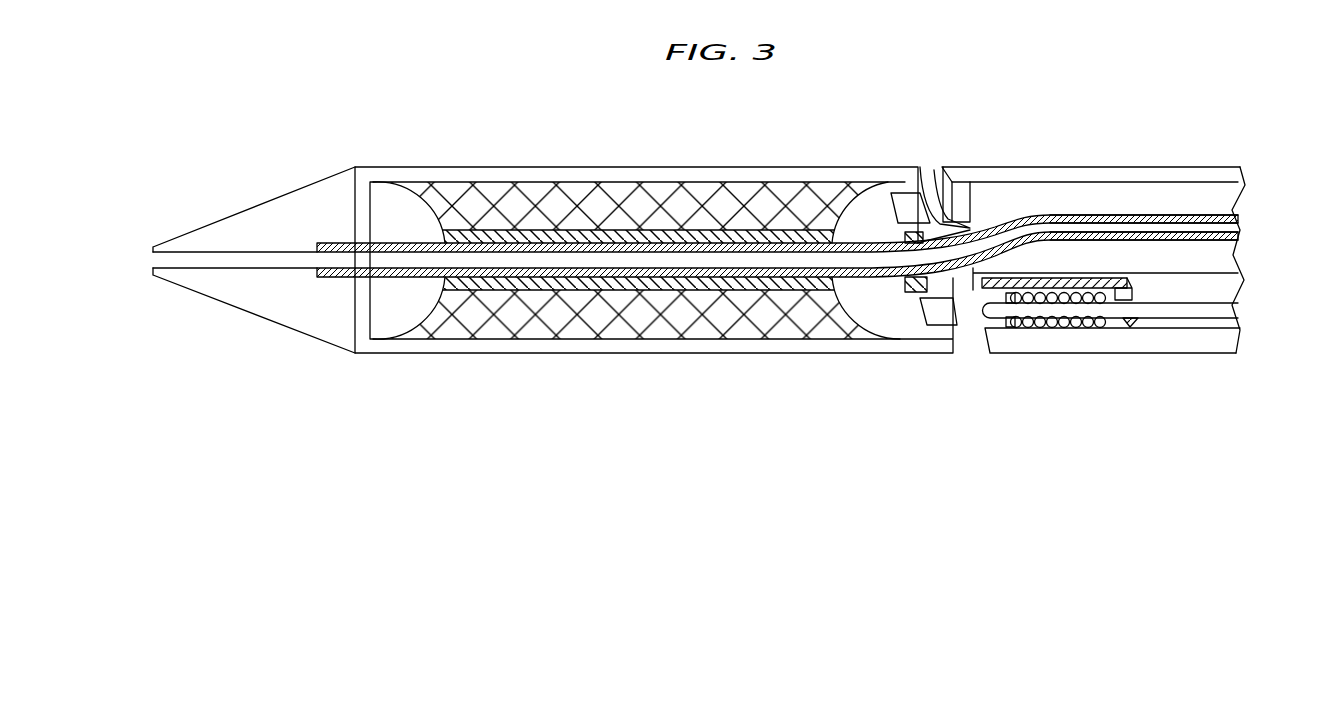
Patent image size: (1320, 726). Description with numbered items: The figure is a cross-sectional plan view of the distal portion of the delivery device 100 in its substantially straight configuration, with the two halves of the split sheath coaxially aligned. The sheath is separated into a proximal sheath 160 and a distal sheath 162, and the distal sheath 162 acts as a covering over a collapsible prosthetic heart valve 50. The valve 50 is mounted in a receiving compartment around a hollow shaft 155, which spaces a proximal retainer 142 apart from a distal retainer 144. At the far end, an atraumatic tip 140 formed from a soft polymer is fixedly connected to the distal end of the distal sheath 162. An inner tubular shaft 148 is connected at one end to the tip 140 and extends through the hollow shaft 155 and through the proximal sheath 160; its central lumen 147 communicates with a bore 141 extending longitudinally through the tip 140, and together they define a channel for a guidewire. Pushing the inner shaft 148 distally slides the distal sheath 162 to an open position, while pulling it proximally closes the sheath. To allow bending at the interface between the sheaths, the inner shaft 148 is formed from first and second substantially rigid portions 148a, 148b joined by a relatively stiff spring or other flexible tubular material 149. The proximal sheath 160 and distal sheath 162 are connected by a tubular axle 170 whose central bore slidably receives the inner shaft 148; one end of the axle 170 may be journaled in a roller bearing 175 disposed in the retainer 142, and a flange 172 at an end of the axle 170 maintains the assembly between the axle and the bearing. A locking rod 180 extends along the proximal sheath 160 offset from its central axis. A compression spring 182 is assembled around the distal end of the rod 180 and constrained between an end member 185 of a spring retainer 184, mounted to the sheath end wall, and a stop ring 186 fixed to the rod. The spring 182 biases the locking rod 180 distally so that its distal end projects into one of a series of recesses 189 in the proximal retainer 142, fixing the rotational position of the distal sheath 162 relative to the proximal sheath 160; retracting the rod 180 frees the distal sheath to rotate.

The collapsible prosthetic heart valve 50 is at (772, 323).
The delivery device 100 is at (866, 474).
The atraumatic tip 140 is at (278, 300).
The bore 141 is at (206, 262).
The proximal retainer 142 is at (873, 208).
The distal retainer 144 is at (392, 212).
The central lumen 147 is at (570, 258).
The inner tubular shaft 148 is at (403, 279).
The first substantially rigid portion 148a is at (699, 247).
The second substantially rigid portion 148b is at (1077, 213).
The flexible tubular material 149 is at (870, 276).
The hollow shaft 155 is at (667, 283).
The proximal sheath 160 is at (1117, 175).
The distal sheath 162 is at (595, 175).
The tubular axle 170 is at (972, 185).
The flange 172 is at (893, 290).
The roller bearing 175 is at (930, 185).
The locking rod 180 is at (1198, 308).
The compression spring 182 is at (1062, 318).
The spring retainer 184 is at (1070, 280).
The end member 185 is at (1133, 303).
The stop ring 186 is at (1015, 318).
The recesses 189 is at (936, 313).